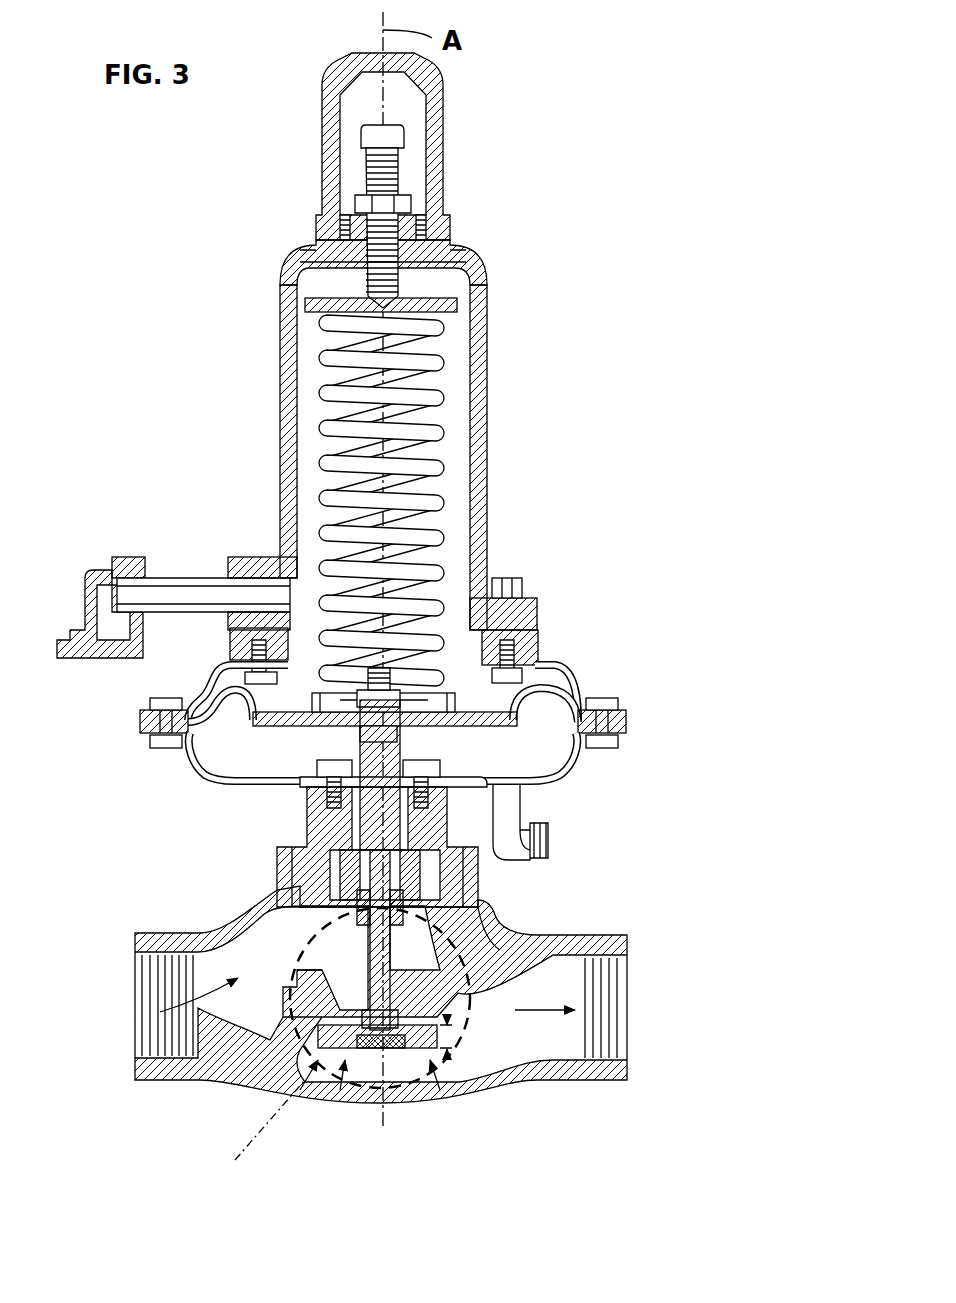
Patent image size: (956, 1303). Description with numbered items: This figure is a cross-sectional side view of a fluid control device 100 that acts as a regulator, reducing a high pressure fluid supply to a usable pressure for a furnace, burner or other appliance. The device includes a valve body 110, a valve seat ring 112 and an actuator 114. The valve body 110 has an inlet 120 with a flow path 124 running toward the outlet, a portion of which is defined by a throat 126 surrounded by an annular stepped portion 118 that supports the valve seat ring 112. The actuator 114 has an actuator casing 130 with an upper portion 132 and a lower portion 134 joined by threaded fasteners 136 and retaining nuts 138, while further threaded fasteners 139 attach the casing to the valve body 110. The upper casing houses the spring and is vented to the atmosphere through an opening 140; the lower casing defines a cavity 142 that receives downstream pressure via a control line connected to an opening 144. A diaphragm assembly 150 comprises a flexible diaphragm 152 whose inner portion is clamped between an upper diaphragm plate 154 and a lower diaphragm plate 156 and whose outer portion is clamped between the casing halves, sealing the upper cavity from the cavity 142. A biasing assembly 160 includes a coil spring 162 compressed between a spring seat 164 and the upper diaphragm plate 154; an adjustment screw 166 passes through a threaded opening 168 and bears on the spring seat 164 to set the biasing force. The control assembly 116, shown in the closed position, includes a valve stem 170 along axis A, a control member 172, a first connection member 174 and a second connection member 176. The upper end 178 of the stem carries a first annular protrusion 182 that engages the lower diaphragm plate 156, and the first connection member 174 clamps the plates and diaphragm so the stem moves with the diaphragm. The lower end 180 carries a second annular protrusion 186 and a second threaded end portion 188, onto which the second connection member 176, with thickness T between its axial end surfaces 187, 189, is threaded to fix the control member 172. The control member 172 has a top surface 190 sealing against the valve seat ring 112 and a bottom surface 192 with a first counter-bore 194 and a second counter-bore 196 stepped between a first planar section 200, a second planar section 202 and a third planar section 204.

The fluid control device 100 is at (112, 238).
The valve body 110 is at (210, 905).
The valve seat ring 112 is at (302, 958).
The actuator 114 is at (215, 462).
The control assembly 116 is at (470, 1060).
The annular stepped portion 118 is at (313, 1002).
The inlet 120 is at (132, 986).
The flow path 124 is at (232, 1060).
The throat 126 is at (353, 972).
The actuator casing 130 is at (196, 768).
The upper portion 132 is at (572, 690).
The lower portion 134 is at (558, 758).
The threaded fasteners 136 is at (165, 699).
The retaining nut 138 is at (262, 700).
The threaded fasteners 139 is at (327, 793).
The opening 140 is at (100, 642).
The cavity 142 is at (550, 743).
The opening 144 is at (546, 850).
The diaphragm assembly 150 is at (222, 730).
The flexible diaphragm 152 is at (503, 730).
The upper diaphragm plate 154 is at (560, 672).
The lower diaphragm plate 156 is at (310, 728).
The biasing assembly 160 is at (449, 438).
The spring 162 is at (428, 378).
The spring seat 164 is at (440, 304).
The adjustment screw 166 is at (400, 136).
The threaded opening 168 is at (398, 258).
The valve stem 170 is at (447, 912).
The control member 172 is at (300, 1083).
The first connection member 174 is at (480, 630).
The second connection member 176 is at (420, 1053).
The upper end 178 is at (345, 750).
The lower end 180 is at (482, 1000).
The first annular protrusion 182 is at (400, 748).
The second annular protrusion 186 is at (393, 1013).
The axial end surface 187 is at (447, 940).
The second threaded end portion 188 is at (383, 1050).
The axial end surface 189 is at (398, 1053).
The top surface 190 is at (358, 1024).
The bottom surface 192 is at (345, 1053).
The first counter-bore 194 is at (372, 1050).
The second counter-bore 196 is at (330, 1050).
The first planar section 200 is at (425, 1062).
The second planar section 202 is at (455, 1046).
The third planar section 204 is at (318, 1056).